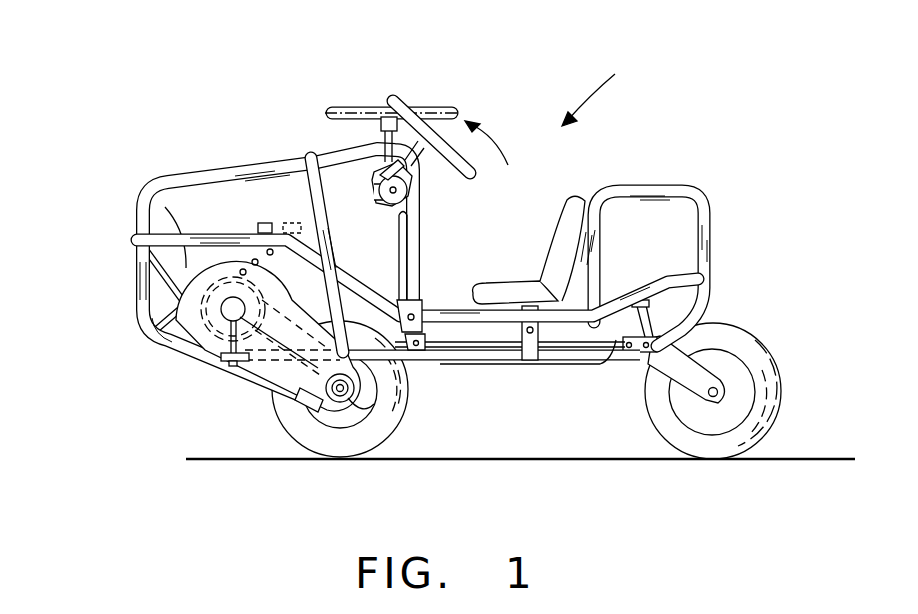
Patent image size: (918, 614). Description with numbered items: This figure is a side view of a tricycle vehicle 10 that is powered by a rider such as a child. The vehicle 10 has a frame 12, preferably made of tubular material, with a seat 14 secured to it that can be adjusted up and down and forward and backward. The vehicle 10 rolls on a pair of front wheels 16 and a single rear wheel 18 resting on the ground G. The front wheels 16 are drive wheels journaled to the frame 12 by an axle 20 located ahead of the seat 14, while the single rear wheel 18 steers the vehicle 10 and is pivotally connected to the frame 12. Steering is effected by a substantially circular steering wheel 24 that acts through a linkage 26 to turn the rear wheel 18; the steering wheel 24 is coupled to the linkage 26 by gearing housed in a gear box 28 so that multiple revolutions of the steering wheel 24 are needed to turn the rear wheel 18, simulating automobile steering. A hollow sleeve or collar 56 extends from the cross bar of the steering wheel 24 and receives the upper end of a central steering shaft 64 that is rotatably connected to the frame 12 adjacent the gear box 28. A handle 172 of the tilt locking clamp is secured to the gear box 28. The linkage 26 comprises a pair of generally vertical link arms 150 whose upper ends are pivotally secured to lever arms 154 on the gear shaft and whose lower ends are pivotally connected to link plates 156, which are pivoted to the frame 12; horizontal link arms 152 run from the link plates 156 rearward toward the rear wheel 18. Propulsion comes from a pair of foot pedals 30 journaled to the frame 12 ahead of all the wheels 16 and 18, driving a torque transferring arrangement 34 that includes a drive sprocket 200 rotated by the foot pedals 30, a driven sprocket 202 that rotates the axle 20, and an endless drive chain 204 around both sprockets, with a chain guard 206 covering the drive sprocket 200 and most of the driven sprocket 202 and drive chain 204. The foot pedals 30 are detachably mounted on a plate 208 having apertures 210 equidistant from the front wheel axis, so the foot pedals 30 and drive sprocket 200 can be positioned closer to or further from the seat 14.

The tricycle vehicle 10 is at (605, 93).
The frame 12 is at (218, 175).
The seat 14 is at (582, 200).
The front wheels 16 is at (277, 420).
The rear wheel 18 is at (780, 372).
The axle 20 is at (377, 385).
The steering wheel 24 is at (392, 100).
The linkage 26 is at (427, 237).
The gear box 28 is at (423, 168).
The foot pedals 30 is at (228, 362).
The torque transferring arrangement 34 is at (162, 327).
The hollow sleeve or collar 56 is at (452, 142).
The steering shaft 64 is at (420, 103).
The vertical link arms 150 is at (362, 200).
The horizontal link arms 152 is at (567, 350).
The lever arms 154 is at (388, 208).
The link plate 156 is at (440, 330).
The handle 172 is at (370, 112).
The drive sprocket 200 is at (262, 377).
The driven sprocket 202 is at (390, 420).
The drive chain 204 is at (275, 393).
The chain guard 206 is at (197, 363).
The plate 208 is at (163, 290).
The apertures 210 is at (163, 205).
The ground G is at (752, 461).